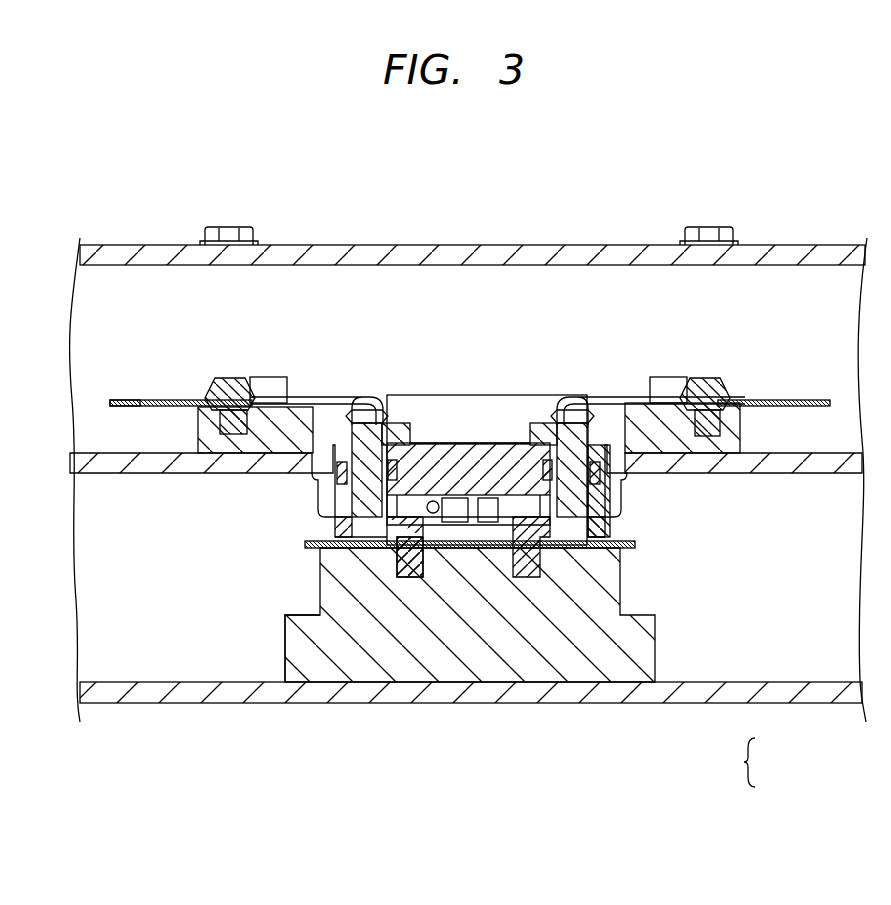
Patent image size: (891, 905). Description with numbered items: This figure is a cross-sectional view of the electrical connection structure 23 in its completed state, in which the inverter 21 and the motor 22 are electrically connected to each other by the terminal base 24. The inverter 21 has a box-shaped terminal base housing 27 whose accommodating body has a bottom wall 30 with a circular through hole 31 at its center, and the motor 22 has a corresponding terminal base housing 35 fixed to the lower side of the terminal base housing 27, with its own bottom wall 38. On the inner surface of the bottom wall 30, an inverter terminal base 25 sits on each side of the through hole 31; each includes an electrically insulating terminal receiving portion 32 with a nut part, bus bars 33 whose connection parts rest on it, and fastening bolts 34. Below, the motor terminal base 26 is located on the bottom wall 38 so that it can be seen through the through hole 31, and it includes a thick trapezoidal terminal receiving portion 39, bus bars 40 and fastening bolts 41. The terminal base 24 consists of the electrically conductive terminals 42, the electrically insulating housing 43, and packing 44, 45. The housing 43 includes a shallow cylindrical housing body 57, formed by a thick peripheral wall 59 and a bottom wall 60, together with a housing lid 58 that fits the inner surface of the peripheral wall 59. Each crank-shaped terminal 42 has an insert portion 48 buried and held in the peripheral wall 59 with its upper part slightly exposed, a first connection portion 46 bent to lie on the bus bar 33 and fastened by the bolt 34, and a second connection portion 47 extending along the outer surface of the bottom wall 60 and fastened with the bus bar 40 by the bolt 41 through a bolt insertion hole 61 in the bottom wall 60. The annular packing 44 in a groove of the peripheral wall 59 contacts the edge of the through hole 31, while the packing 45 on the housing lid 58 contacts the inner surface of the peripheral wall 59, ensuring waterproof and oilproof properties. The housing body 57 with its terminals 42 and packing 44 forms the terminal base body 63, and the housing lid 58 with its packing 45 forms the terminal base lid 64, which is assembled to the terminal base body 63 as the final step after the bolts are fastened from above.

The inverter 21 is at (135, 243).
The motor 22 is at (471, 704).
The electrical connection structure 23 is at (660, 214).
The terminal base 24 is at (512, 360).
The inverter terminal base 25 is at (182, 400).
The motor terminal base 26 is at (622, 580).
The terminal base housing 27 is at (102, 285).
The bottom wall 30 is at (110, 453).
The through hole 31 is at (320, 470).
The terminal receiving portion 32 is at (210, 450).
The bus bar 33 is at (120, 404).
The fastening bolt 34 is at (225, 385).
The terminal base housing 35 is at (102, 660).
The bottom wall 38 is at (139, 712).
The terminal receiving portion 39 is at (290, 633).
The bus bar 40 is at (305, 542).
The fastening bolt 41 is at (440, 512).
The terminal 42 is at (365, 430).
The housing 43 is at (748, 763).
The packing 44 is at (605, 480).
The packing 45 is at (503, 440).
The first connection portion 46 is at (330, 397).
The second connection portion 47 is at (385, 528).
The insert portion 48 is at (390, 443).
The housing body 57 is at (605, 522).
The housing lid 58 is at (480, 443).
The peripheral wall 59 is at (585, 500).
The bottom wall 60 is at (490, 528).
The bolt insertion hole 61 is at (432, 512).
The terminal base body 63 is at (603, 468).
The terminal base lid 64 is at (545, 445).